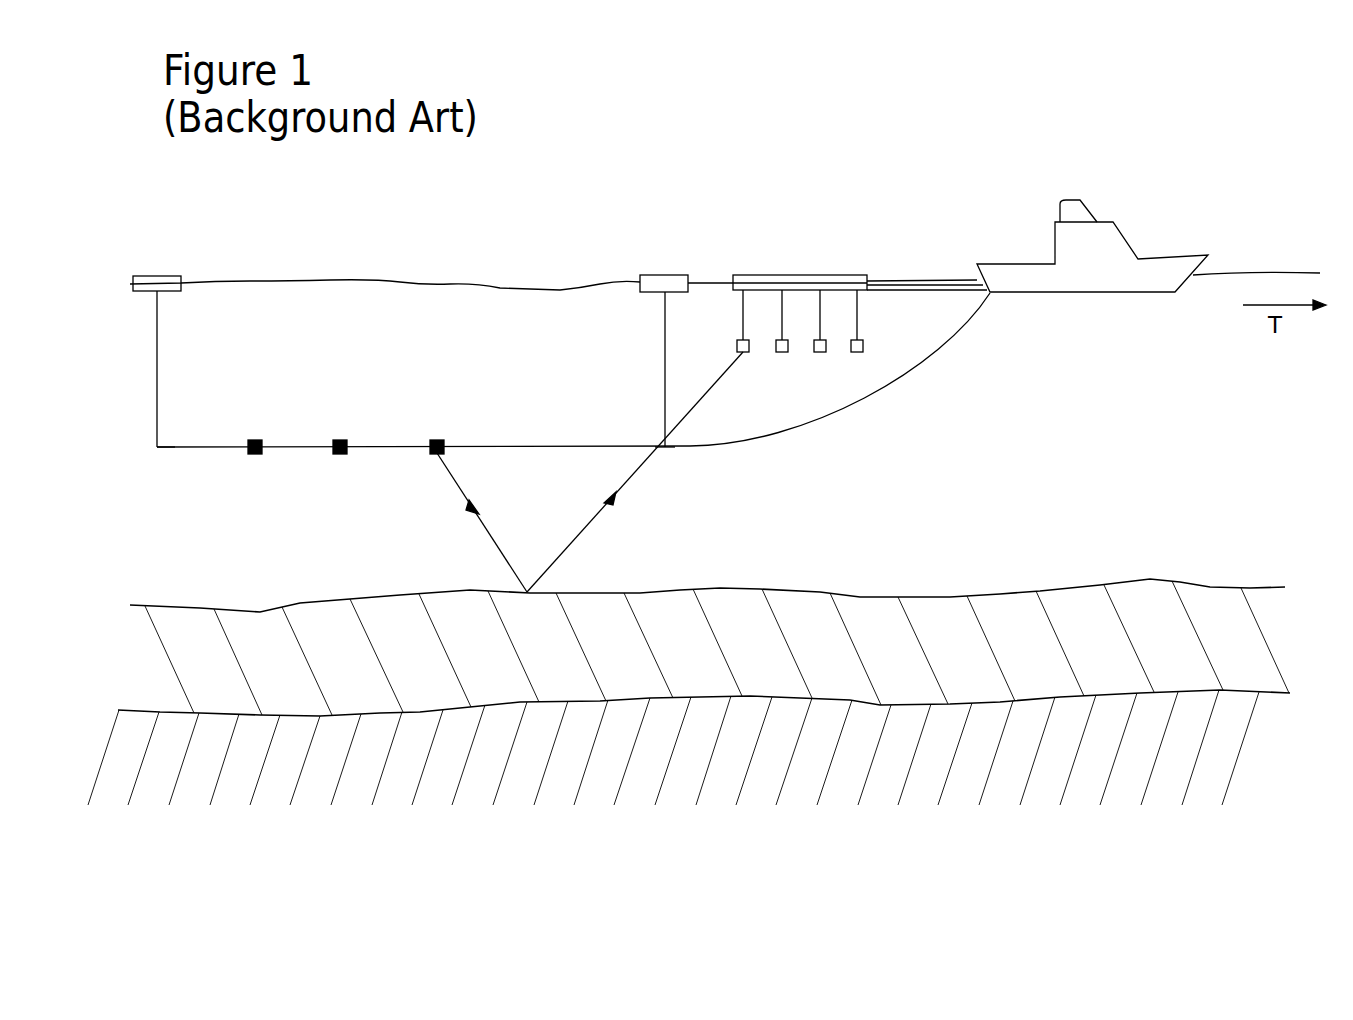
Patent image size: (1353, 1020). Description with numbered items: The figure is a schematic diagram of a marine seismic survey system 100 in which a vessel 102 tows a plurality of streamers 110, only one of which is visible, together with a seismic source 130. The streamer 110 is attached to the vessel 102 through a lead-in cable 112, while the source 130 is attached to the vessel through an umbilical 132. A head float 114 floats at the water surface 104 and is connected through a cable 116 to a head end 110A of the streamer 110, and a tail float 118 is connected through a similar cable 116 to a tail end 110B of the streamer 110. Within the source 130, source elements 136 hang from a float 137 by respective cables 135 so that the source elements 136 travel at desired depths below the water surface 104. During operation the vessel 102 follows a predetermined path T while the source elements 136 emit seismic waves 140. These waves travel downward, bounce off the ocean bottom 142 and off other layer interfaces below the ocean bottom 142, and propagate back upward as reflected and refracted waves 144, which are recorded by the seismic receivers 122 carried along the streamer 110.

The marine seismic survey system 100 is at (712, 142).
The vessel 102 is at (1167, 236).
The water surface 104 is at (452, 282).
The streamer 110 is at (567, 445).
The head end 110A is at (660, 452).
The tail end 110B is at (160, 450).
The lead-in cable 112 is at (874, 406).
The head float 114 is at (652, 275).
The cable 116 is at (160, 340).
The tail float 118 is at (145, 276).
The seismic receivers 122 is at (338, 456).
The seismic source 130 is at (860, 272).
The umbilical 132 is at (902, 284).
The cables 135 is at (863, 312).
The source elements 136 is at (782, 353).
The float 137 is at (798, 275).
The seismic waves 140 is at (578, 538).
The ocean bottom 142 is at (888, 596).
The reflected/refracted waves 144 is at (500, 556).